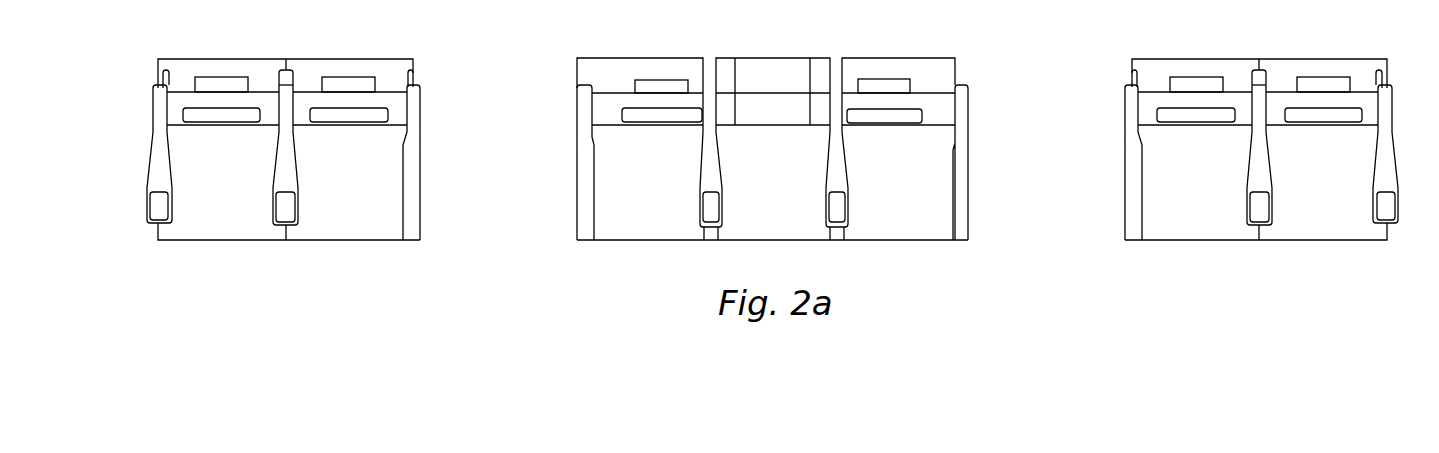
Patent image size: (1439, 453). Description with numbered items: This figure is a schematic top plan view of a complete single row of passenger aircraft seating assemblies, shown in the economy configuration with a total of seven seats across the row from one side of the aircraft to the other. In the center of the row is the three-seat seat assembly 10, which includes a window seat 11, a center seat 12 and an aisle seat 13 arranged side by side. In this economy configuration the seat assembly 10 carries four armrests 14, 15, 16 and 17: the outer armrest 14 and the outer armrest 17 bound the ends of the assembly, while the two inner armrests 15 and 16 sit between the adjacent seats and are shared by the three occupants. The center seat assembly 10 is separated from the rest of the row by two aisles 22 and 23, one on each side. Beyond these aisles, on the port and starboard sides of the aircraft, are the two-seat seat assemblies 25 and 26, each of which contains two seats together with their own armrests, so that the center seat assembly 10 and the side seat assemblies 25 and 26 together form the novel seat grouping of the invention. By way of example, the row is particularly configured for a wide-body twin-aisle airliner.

The seat assembly 10 is at (550, 46).
The window seat 11 is at (659, 191).
The center seat 12 is at (787, 194).
The aisle seat 13 is at (911, 194).
The armrest 14 is at (583, 222).
The armrest 15 is at (710, 218).
The armrest 16 is at (835, 222).
The armrest 17 is at (963, 225).
The aisle 22 is at (512, 168).
The aisle 23 is at (1059, 168).
The seat assembly 25 is at (121, 148).
The seat assembly 26 is at (1411, 134).